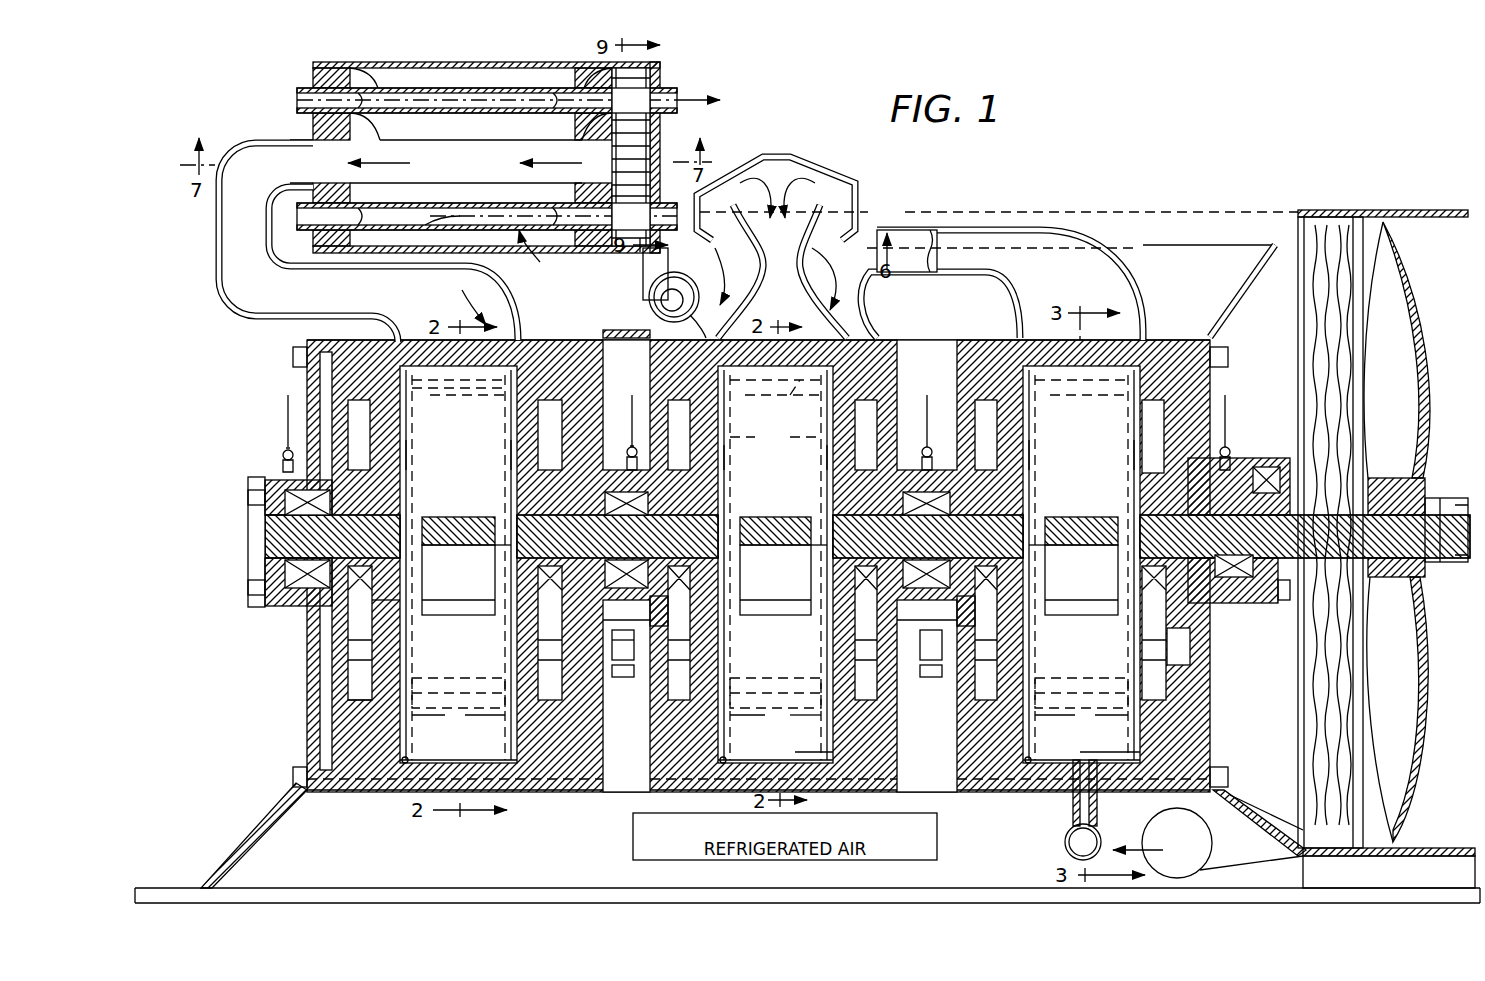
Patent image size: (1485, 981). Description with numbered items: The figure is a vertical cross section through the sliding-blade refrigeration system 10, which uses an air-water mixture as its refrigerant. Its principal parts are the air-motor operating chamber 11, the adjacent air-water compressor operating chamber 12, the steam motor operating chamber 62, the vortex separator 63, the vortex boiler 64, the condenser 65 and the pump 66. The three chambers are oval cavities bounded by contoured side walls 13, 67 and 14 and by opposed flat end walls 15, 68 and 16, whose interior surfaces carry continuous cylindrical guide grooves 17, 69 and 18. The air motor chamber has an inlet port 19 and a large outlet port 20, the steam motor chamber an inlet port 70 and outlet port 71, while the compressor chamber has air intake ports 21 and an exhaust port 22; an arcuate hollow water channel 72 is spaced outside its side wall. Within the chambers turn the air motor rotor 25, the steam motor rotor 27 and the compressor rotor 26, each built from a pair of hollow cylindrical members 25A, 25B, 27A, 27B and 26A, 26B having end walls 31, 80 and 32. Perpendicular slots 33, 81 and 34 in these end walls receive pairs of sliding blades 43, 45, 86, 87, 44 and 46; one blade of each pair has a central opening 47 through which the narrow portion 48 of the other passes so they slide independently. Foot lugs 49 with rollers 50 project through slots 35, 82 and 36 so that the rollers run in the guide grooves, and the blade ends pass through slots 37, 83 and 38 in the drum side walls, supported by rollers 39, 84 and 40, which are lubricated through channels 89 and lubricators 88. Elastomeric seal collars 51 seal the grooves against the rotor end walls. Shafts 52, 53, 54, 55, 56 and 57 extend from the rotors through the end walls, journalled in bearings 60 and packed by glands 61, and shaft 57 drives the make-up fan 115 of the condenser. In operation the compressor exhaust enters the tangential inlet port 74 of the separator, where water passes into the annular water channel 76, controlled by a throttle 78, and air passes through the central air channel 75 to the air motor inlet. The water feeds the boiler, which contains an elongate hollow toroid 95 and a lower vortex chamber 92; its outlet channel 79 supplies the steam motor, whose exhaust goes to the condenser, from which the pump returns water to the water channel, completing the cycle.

The refrigeration system 10 is at (1318, 207).
The air-motor operating chamber 11 is at (645, 780).
The air-water compressor operating chamber 12 is at (950, 776).
The side wall 13 is at (738, 772).
The side wall 14 is at (1040, 760).
The flat end walls 15 is at (724, 738).
The flat end walls 16 is at (1030, 742).
The guide groove 17 is at (724, 506).
The guide groove 18 is at (1220, 652).
The inlet port 19 is at (757, 366).
The outlet port 20 is at (858, 797).
The air intake ports 21 is at (1182, 818).
The exhaust port 22 is at (1147, 318).
The air motor rotor 25 is at (626, 625).
The hollow cylindrical member 25A is at (754, 727).
The hollow cylindrical member 25B is at (812, 727).
The air-water compressor rotor 26 is at (927, 628).
The hollow cylindrical member 26A is at (1062, 728).
The hollow cylindrical member 26B is at (1117, 728).
The steam motor rotor 27 is at (350, 662).
The hollow cylindrical member 27A is at (438, 726).
The hollow cylindrical member 27B is at (485, 726).
The end wall 31 is at (626, 648).
The end wall 32 is at (979, 614).
The elongate rectangular slots 33 is at (775, 437).
The elongate rectangular slots 34 is at (1081, 567).
The rectangular perpendicular slots 35 is at (835, 448).
The rectangular perpendicular slots 36 is at (1135, 440).
The slots 37 is at (792, 405).
The slots 38 is at (1062, 365).
The rollers 39 is at (775, 674).
The rollers 40 is at (1060, 668).
The blade 43 is at (814, 747).
The blade 44 is at (1110, 745).
The blade 45 is at (775, 580).
The blade 46 is at (1081, 580).
The central rectangular opening 47 is at (770, 586).
The central narrow rectangular portion 48 is at (770, 547).
The foot lug 49 is at (520, 488).
The roller 50 is at (768, 436).
The elastomeric seal collar 51 is at (350, 680).
The shaft 52 is at (362, 610).
The shaft 53 is at (520, 560).
The shaft 54 is at (655, 620).
The shaft 55 is at (840, 560).
The shaft 56 is at (1030, 570).
The shaft 57 is at (1270, 480).
The bearings 60 is at (297, 607).
The glands 61 is at (1285, 600).
The steam motor operating chamber 62 is at (305, 747).
The vortex separator 63 is at (858, 186).
The vortex boiler 64 is at (312, 82).
The condenser 65 is at (1297, 358).
The pump 66 is at (1213, 830).
The side wall 67 is at (400, 787).
The flat end walls 68 is at (402, 722).
The guide groove 69 is at (323, 450).
The inlet port 70 is at (437, 372).
The outlet port 71 is at (408, 338).
The water channel 72 is at (1070, 847).
The tangential inlet port 74 is at (999, 268).
The central air channel 75 is at (781, 271).
The water channel 76 is at (674, 293).
The throttle 78 is at (645, 344).
The outlet channel 79 is at (262, 318).
The end wall 80 is at (325, 637).
The elongate rectangular slots 81 is at (458, 416).
The rectangular perpendicular slots 82 is at (520, 458).
The slots 83 is at (487, 338).
The rollers 84 is at (486, 675).
The blade 86 is at (453, 751).
The blade 87 is at (458, 580).
The lubricators 88 is at (286, 448).
The channels 89 is at (282, 460).
The lower vortex chamber 92 is at (642, 150).
The elongate hollow toroid 95 is at (538, 255).
The make-up fan 115 is at (1402, 310).